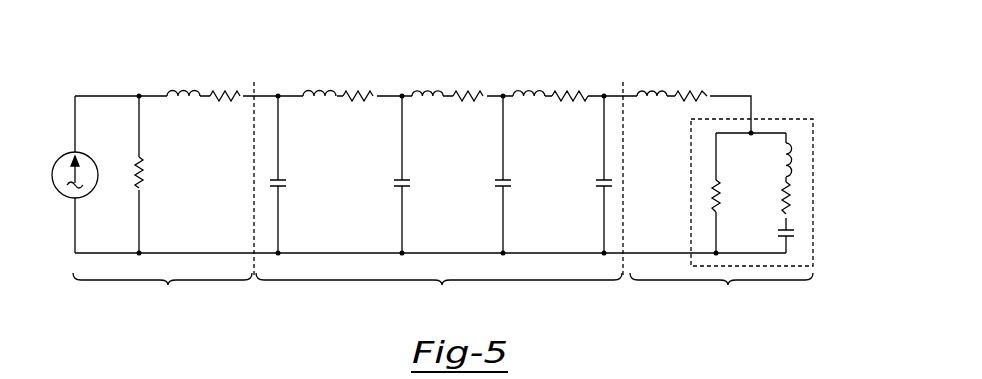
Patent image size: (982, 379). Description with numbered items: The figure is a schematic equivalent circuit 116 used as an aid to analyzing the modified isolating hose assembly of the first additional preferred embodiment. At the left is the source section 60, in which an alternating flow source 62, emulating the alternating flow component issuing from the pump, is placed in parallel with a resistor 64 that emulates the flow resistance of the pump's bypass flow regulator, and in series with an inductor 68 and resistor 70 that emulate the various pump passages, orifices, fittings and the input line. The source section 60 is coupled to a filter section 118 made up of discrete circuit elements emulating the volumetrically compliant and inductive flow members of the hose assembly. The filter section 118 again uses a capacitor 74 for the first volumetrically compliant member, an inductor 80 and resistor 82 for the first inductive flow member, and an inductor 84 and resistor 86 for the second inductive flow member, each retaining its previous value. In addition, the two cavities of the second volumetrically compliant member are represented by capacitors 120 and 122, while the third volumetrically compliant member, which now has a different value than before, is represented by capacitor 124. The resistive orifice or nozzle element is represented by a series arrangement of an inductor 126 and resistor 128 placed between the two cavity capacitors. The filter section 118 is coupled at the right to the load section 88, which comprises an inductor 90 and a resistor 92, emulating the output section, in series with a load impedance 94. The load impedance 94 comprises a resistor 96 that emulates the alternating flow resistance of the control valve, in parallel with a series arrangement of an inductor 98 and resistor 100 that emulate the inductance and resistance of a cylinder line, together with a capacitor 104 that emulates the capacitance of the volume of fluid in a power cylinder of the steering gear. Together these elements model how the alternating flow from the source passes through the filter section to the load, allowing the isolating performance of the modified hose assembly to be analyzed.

The source section 60 is at (162, 295).
The alternating flow source 62 is at (56, 160).
The resistor 64 is at (136, 182).
The inductor 68 is at (177, 88).
The resistor 70 is at (220, 90).
The capacitor 74 is at (281, 178).
The inductor 80 is at (322, 86).
The resistor 82 is at (360, 90).
The inductor 84 is at (530, 86).
The resistor 86 is at (568, 90).
The load section 88 is at (721, 295).
The inductor 90 is at (652, 86).
The resistor 92 is at (692, 90).
The load impedance 94 is at (814, 147).
The resistor 96 is at (714, 183).
The inductor 98 is at (789, 140).
The resistor 100 is at (784, 200).
The capacitor 104 is at (783, 238).
The equivalent circuit 116 is at (755, 42).
The filter section 118 is at (439, 295).
The capacitor 120 is at (402, 180).
The capacitor 122 is at (503, 178).
The capacitor 124 is at (604, 178).
The inductor 126 is at (432, 86).
The resistor 128 is at (475, 90).